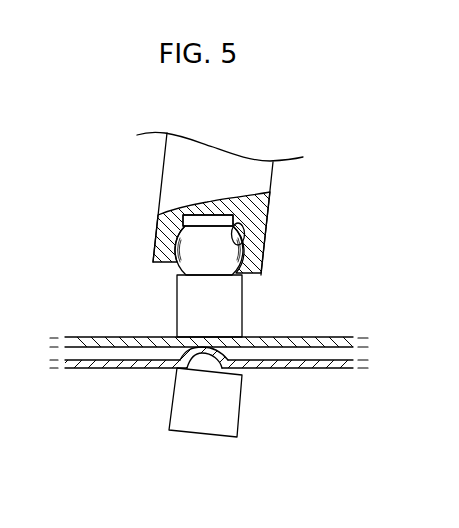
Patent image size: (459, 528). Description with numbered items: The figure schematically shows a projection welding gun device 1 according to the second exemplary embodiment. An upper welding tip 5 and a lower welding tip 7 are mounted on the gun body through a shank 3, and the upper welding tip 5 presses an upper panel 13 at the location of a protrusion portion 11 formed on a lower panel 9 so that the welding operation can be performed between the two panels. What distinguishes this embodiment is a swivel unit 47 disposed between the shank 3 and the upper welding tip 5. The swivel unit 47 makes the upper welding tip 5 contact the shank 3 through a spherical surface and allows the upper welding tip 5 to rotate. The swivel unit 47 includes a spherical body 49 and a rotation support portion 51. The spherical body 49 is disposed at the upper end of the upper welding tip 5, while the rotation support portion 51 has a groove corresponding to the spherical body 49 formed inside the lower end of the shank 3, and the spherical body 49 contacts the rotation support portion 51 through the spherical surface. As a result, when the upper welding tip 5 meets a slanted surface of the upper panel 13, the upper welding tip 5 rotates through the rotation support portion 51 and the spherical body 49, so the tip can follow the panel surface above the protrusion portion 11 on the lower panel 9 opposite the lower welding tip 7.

The projection welding gun device 1 is at (96, 169).
The shank 3 is at (263, 183).
The upper welding tip 5 is at (235, 313).
The lower welding tip 7 is at (203, 432).
The lower panel 9 is at (332, 369).
The protrusion portion 11 is at (186, 361).
The upper panel 13 is at (343, 338).
The swivel unit 47 is at (257, 258).
The spherical body 49 is at (177, 247).
The rotation support portion 51 is at (247, 229).